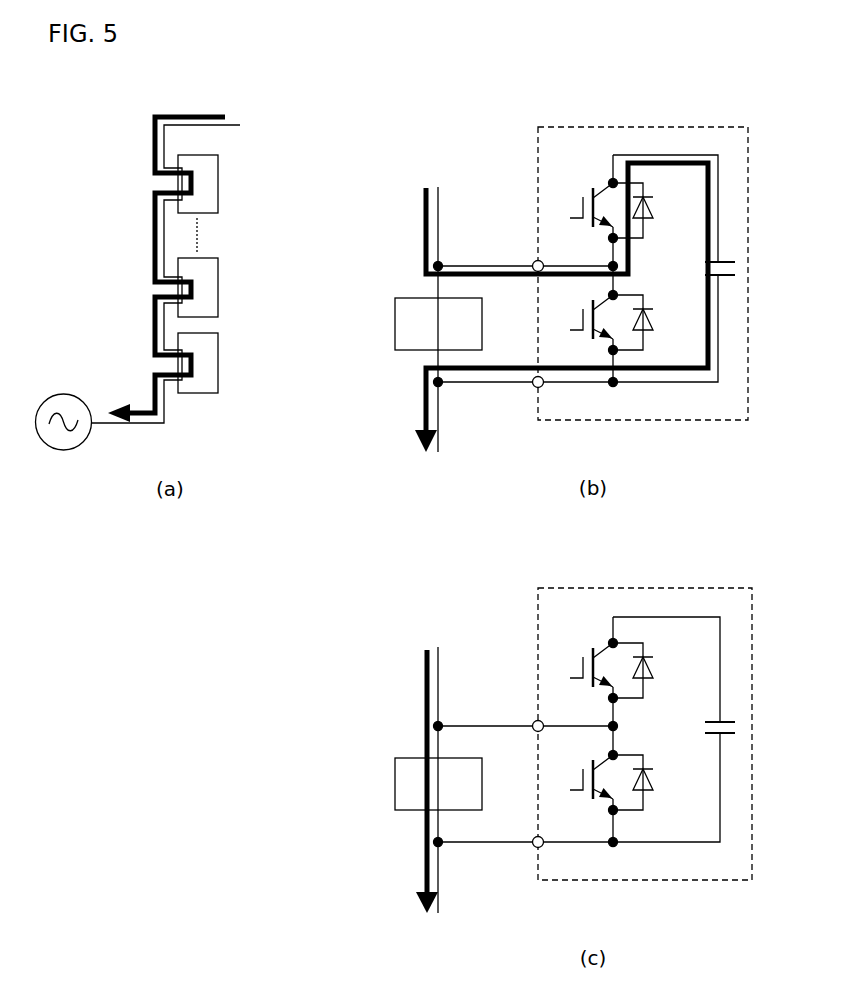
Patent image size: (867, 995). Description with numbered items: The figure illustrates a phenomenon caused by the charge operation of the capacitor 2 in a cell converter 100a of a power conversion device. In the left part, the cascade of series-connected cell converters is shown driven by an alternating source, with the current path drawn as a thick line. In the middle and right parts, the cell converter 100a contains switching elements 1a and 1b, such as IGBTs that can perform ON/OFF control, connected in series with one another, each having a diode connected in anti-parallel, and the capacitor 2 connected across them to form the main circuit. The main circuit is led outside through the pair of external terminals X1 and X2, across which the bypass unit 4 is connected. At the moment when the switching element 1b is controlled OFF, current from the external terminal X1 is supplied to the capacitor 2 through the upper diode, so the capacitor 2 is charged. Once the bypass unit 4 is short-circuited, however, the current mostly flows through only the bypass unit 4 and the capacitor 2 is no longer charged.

The cell converter 100a is at (806, 102).
The switching element 1a is at (592, 189).
The switching element 1b is at (603, 303).
The capacitor 2 is at (727, 255).
The bypass unit 4 is at (438, 554).
The external terminal X1 is at (534, 262).
The external terminal X2 is at (535, 387).